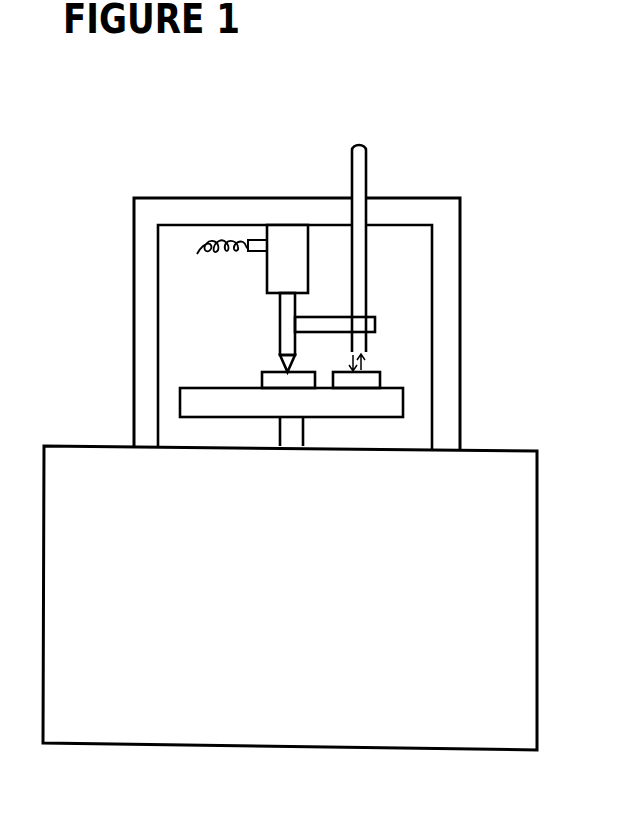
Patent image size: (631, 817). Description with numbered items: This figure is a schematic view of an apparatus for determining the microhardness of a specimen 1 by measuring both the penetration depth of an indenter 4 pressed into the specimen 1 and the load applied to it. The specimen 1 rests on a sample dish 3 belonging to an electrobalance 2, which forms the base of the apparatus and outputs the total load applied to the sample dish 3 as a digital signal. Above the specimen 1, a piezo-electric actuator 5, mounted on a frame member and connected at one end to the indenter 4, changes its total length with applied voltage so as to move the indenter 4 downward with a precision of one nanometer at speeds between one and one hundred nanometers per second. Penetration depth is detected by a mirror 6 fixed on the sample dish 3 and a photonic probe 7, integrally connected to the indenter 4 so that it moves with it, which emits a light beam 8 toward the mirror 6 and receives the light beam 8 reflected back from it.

The specimen 1 is at (262, 385).
The electrobalance 2 is at (514, 527).
The sample dish 3 is at (403, 405).
The indenter 4 is at (280, 330).
The piezo-electric actuator 5 is at (284, 237).
The mirror 6 is at (378, 383).
The photonic probe 7 is at (365, 293).
The light beam 8 is at (366, 362).